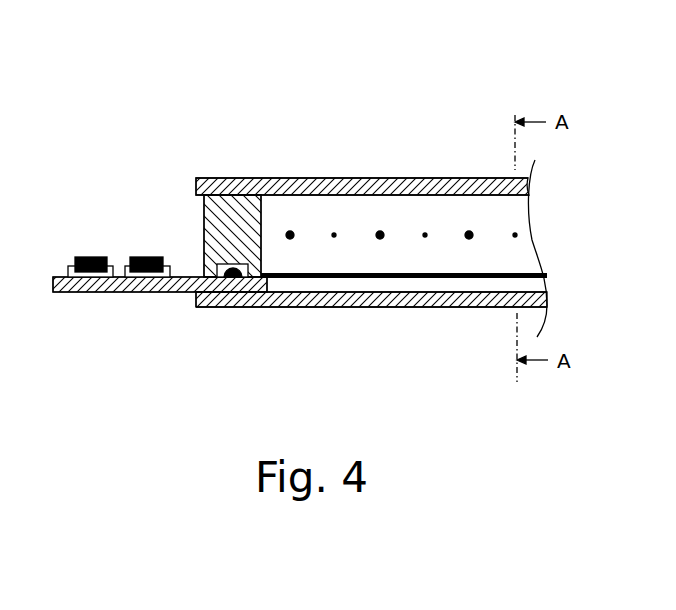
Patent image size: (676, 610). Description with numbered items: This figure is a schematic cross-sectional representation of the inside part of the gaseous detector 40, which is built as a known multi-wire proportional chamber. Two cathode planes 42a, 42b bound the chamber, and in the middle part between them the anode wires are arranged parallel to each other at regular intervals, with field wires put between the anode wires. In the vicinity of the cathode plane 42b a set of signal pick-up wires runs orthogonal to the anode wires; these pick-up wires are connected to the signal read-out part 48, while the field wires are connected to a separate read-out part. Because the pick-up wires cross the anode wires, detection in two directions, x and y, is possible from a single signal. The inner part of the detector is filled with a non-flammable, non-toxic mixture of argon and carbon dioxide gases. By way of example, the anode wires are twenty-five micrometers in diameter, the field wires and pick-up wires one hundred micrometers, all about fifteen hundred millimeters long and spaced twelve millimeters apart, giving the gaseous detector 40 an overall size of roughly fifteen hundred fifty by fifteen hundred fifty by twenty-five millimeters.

The gaseous detector 40 is at (515, 92).
The cathode plane 42a is at (262, 178).
The cathode plane 42b is at (236, 308).
The signal read-out part 48 is at (91, 255).